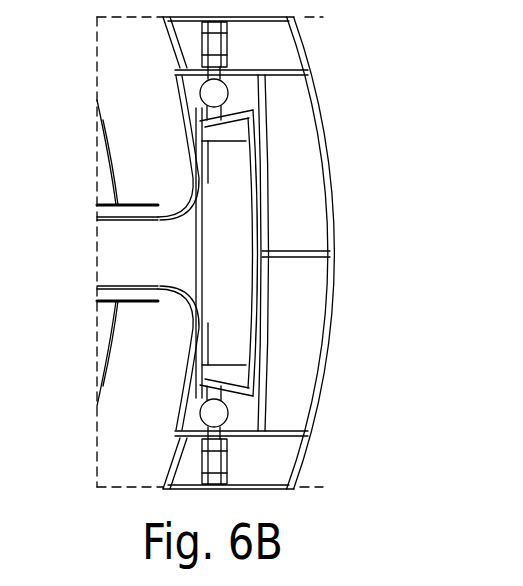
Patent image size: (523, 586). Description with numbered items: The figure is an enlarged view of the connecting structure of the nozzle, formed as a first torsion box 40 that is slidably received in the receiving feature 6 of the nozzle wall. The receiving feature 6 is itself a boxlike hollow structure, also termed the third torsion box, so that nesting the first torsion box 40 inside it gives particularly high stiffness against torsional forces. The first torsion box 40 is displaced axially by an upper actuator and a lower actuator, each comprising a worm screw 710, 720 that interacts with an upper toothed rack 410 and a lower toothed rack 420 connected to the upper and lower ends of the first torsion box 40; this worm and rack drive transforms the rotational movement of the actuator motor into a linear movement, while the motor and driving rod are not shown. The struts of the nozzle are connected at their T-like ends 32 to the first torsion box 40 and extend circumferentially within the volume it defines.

The receiving feature 6 is at (268, 228).
The T-like ends 32 is at (200, 260).
The first torsion box 40 is at (262, 158).
The upper toothed rack 410 is at (232, 112).
The lower toothed rack 420 is at (235, 397).
The worm screw 710 is at (224, 86).
The worm screw 720 is at (218, 420).